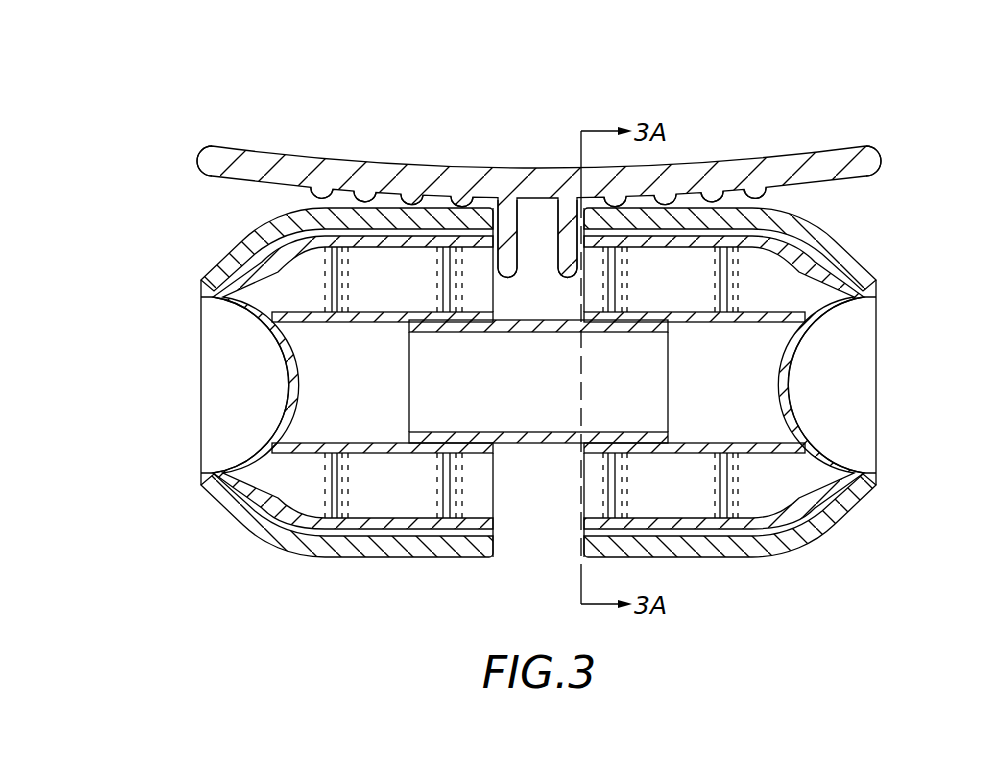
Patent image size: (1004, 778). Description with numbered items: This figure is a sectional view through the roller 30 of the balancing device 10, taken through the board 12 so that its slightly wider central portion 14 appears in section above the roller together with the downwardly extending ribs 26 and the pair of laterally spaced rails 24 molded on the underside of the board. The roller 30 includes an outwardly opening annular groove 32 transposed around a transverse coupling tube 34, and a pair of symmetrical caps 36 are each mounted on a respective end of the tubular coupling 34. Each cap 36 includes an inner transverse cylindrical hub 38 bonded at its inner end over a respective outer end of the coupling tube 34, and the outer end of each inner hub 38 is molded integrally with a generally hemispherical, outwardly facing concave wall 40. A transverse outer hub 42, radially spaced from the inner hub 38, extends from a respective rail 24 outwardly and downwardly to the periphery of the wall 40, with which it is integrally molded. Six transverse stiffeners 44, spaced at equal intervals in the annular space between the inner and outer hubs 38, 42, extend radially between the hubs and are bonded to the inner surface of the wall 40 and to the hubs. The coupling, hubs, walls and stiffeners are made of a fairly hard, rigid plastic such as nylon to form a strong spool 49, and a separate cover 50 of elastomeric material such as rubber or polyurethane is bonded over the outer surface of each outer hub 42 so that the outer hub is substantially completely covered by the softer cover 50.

The balancing device 10 is at (867, 83).
The board 12 is at (370, 162).
The central portion 14 is at (199, 151).
The rails 24 is at (520, 204).
The ribs 26 is at (313, 190).
The roller 30 is at (819, 550).
The annular groove 32 is at (520, 550).
The coupling tube 34 is at (530, 430).
The caps 36 is at (193, 368).
The inner hub 38 is at (352, 323).
The concave wall 40 is at (278, 410).
The outer hub 42 is at (374, 249).
The stiffeners 44 is at (308, 293).
The spool 49 is at (194, 272).
The cover 50 is at (372, 558).